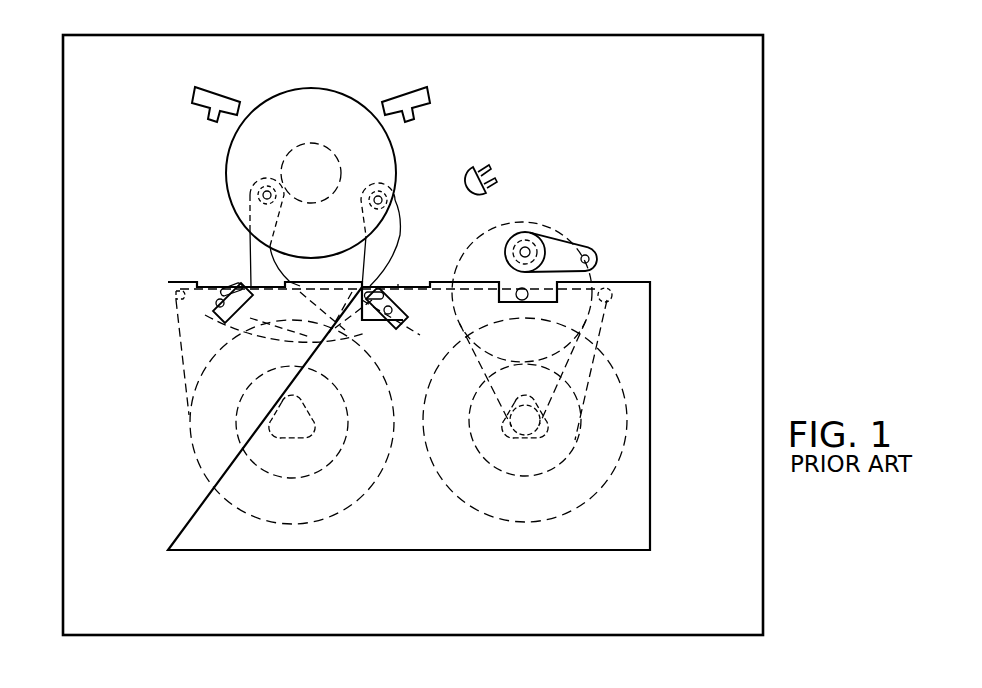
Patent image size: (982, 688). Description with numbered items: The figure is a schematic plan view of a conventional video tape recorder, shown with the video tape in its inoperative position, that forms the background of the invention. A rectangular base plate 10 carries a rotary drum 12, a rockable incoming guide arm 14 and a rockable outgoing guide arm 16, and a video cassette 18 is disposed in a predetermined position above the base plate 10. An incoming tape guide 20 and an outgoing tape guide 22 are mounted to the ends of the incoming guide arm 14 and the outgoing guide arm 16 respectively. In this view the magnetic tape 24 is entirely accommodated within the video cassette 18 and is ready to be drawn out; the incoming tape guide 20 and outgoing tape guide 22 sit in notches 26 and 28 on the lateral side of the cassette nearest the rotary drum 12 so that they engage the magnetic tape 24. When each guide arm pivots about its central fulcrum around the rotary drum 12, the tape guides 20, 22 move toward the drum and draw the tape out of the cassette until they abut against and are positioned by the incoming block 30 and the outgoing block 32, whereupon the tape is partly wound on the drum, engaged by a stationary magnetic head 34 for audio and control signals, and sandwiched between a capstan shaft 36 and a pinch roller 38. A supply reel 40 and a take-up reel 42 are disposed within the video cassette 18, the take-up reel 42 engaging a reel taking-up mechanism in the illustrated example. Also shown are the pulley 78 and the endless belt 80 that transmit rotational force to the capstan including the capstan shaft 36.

The base plate 10 is at (713, 35).
The rotary drum 12 is at (312, 88).
The incoming guide arm 14 is at (404, 200).
The outgoing guide arm 16 is at (249, 240).
The video cassette 18 is at (650, 406).
The incoming tape guide 20 is at (222, 290).
The outgoing tape guide 22 is at (407, 297).
The magnetic tape 24 is at (398, 284).
The notch 26 is at (210, 288).
The notch 28 is at (404, 322).
The incoming block 30 is at (222, 97).
The outgoing block 32 is at (402, 95).
The stationary magnetic head 34 is at (469, 168).
The capstan shaft 36 is at (522, 301).
The pinch roller 38 is at (530, 236).
The supply reel 40 is at (297, 524).
The take-up reel 42 is at (514, 524).
The pulley 78 is at (528, 432).
The endless belt 80 is at (600, 350).